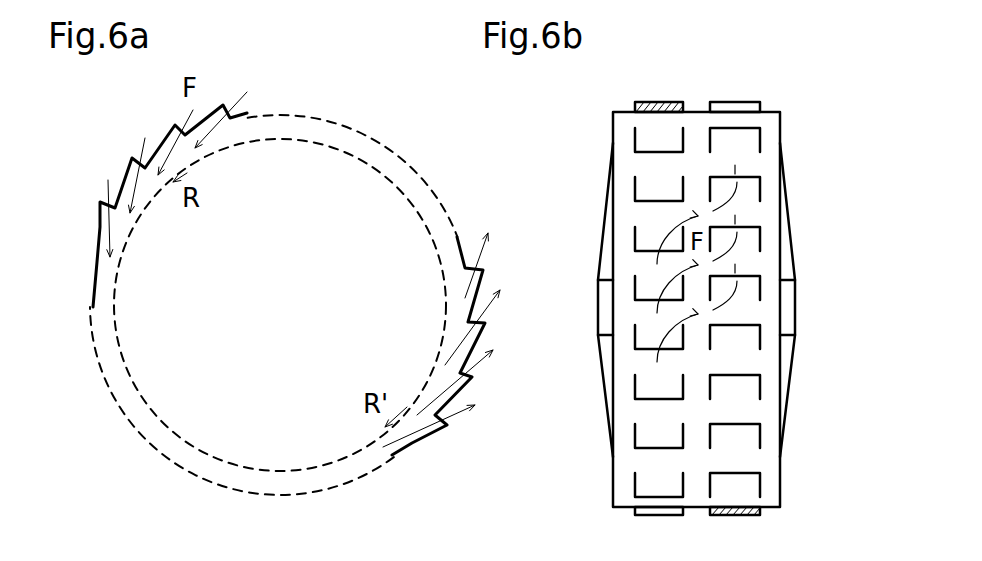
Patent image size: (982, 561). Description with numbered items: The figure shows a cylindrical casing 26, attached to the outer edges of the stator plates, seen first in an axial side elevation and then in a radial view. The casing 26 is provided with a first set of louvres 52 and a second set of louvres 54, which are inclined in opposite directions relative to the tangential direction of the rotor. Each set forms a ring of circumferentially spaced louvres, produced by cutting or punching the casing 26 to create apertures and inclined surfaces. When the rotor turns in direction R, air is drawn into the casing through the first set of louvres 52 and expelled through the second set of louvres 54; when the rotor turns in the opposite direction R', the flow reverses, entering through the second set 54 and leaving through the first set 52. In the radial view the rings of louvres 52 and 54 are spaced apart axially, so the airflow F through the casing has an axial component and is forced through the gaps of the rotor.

In FIG. 6a, the cylindrical casing 26 is at (292, 330).
In FIG. 6b, the cylindrical casing 26 is at (762, 403).
In FIG. 6a, the first set of louvres 52 is at (100, 222).
In FIG. 6b, the first set of louvres 52 is at (660, 102).
In FIG. 6a, the second set of louvres 54 is at (480, 282).
In FIG. 6b, the second set of louvres 54 is at (733, 112).